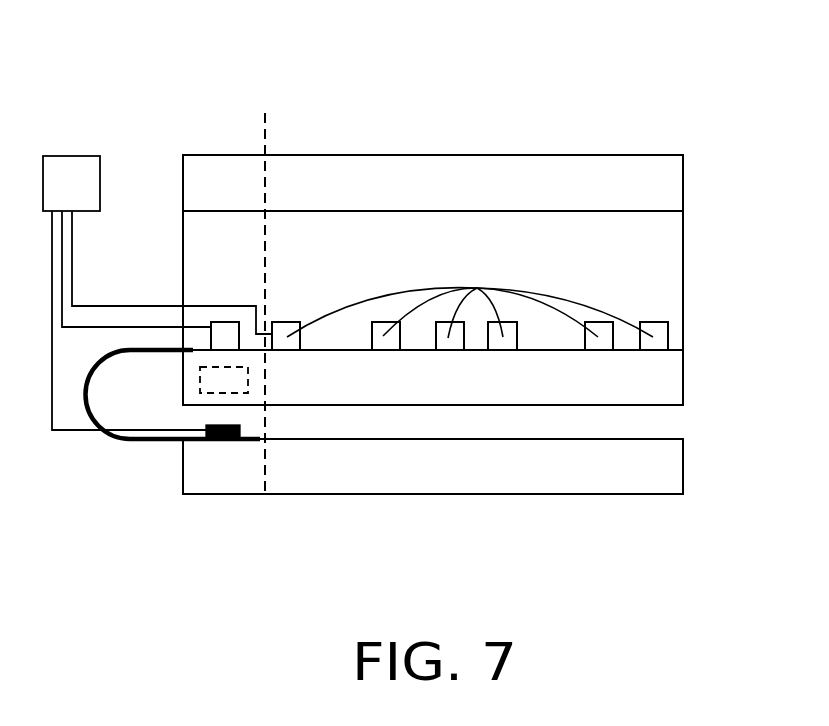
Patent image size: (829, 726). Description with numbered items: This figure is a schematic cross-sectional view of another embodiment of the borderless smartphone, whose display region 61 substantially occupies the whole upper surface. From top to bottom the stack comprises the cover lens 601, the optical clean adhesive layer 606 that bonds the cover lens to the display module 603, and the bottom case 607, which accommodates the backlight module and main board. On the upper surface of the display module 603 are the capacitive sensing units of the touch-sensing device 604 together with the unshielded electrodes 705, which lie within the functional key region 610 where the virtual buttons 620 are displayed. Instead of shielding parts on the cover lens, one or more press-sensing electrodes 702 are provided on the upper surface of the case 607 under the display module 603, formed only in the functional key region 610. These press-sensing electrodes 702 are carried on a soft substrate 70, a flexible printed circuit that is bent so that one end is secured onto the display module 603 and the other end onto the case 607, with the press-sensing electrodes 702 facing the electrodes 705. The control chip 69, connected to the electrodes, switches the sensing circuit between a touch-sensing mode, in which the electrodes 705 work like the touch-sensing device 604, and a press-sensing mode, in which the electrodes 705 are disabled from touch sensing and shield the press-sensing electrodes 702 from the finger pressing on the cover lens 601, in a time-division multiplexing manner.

The display region 61 is at (684, 86).
The cover lens 601 is at (668, 178).
The optical clean adhesive layer 606 is at (205, 258).
The functional key region 610 is at (223, 146).
The display module 603 is at (668, 378).
The bottom case 607 is at (668, 470).
The touch-sensing device 604 is at (470, 302).
The unshielded electrodes 705 is at (216, 322).
The control chip 69 is at (68, 168).
The virtual buttons 620 is at (243, 383).
The soft substrate 70 is at (128, 440).
The press-sensing electrodes 702 is at (240, 432).